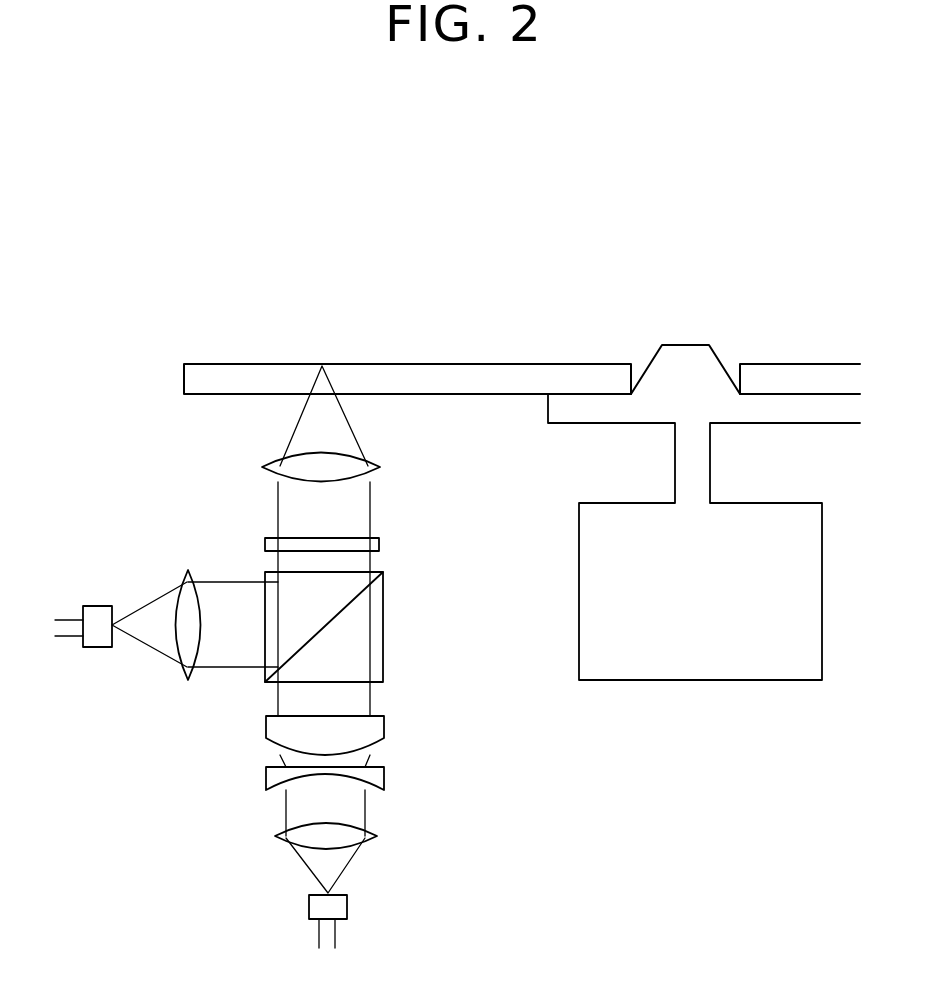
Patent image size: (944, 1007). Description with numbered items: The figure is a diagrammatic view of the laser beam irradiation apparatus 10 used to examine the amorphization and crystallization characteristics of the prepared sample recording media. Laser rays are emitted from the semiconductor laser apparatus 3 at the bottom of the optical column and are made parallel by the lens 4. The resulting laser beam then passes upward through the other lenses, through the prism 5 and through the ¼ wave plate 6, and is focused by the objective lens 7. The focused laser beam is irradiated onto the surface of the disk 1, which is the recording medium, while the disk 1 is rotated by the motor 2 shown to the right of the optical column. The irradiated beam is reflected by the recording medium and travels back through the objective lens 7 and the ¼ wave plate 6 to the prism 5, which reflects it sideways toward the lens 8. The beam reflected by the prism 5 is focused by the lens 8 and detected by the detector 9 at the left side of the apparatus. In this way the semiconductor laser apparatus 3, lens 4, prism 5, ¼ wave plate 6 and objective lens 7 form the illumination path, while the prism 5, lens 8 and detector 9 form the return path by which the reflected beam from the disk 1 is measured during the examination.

The disk 1 is at (458, 372).
The motor 2 is at (722, 680).
The semiconductor laser apparatus 3 is at (348, 908).
The lens 4 is at (378, 836).
The prism 5 is at (384, 628).
The ¼ wave plate 6 is at (380, 545).
The objective lens 7 is at (380, 463).
The lens 8 is at (185, 680).
The detector 9 is at (96, 647).
The laser beam irradiation apparatus 10 is at (191, 820).